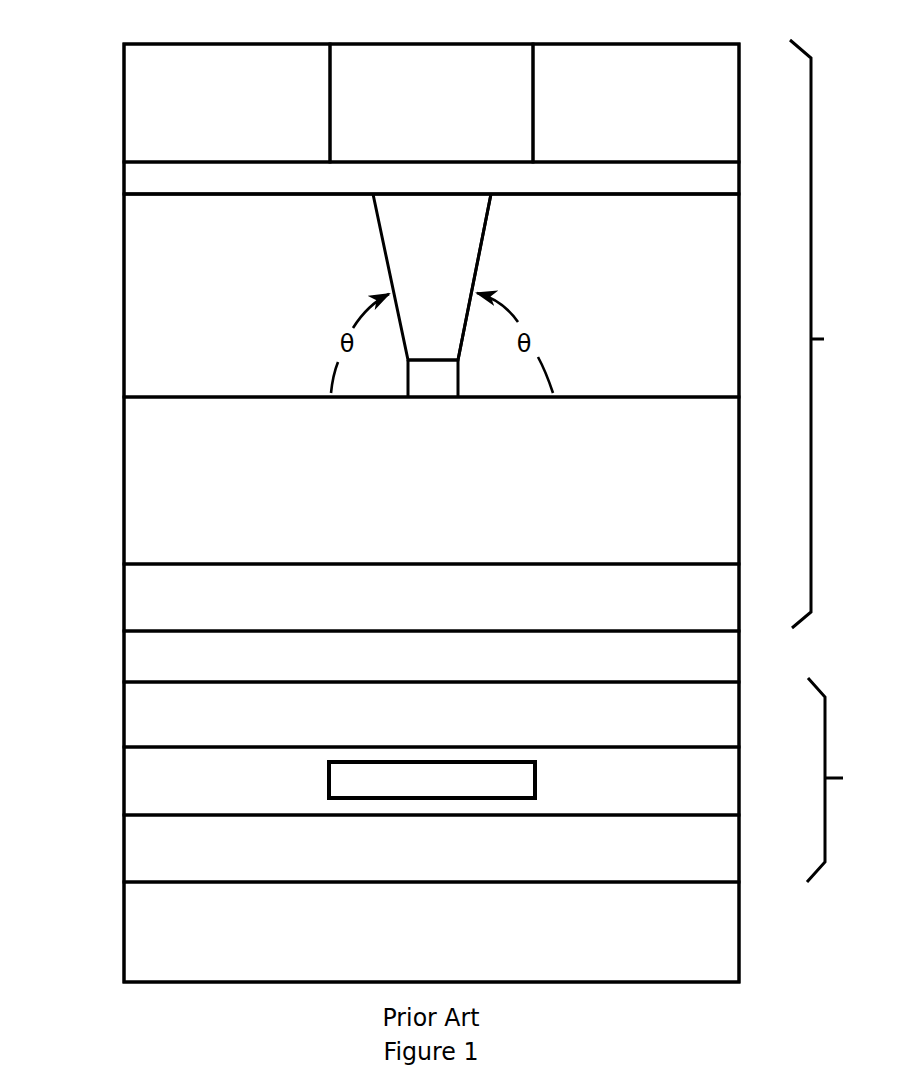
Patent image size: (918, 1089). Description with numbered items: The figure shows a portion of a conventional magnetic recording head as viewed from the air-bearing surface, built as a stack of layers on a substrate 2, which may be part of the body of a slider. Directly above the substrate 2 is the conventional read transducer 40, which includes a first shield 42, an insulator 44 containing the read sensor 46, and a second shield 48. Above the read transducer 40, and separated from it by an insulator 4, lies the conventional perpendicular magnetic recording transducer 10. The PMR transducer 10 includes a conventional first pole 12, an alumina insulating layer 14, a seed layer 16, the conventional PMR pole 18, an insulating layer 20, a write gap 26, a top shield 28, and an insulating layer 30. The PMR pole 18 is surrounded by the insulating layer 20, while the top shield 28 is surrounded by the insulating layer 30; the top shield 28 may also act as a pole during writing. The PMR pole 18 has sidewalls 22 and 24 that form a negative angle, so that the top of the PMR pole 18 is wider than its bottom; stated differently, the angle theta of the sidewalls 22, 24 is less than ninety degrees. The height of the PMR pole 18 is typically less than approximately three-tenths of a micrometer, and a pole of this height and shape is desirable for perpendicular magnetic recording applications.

The substrate 2 is at (124, 947).
The insulator 4 is at (124, 648).
The perpendicular magnetic recording transducer 10 is at (822, 334).
The first pole 12 is at (739, 597).
The alumina insulating layer 14 is at (124, 522).
The seed layer 16 is at (408, 377).
The PMR pole 18 is at (527, 293).
The insulating layer 20 is at (124, 292).
The sidewall 22 is at (581, 254).
The sidewall 24 is at (775, 176).
The write gap 26 is at (124, 178).
The top shield 28 is at (449, 44).
The insulating layer 30 is at (124, 56).
The read transducer 40 is at (842, 780).
The shield 42 is at (739, 847).
The insulator 44 is at (124, 782).
The read sensor 46 is at (329, 780).
The shield 48 is at (739, 712).